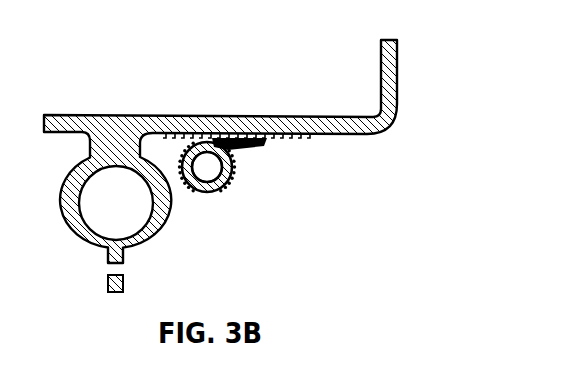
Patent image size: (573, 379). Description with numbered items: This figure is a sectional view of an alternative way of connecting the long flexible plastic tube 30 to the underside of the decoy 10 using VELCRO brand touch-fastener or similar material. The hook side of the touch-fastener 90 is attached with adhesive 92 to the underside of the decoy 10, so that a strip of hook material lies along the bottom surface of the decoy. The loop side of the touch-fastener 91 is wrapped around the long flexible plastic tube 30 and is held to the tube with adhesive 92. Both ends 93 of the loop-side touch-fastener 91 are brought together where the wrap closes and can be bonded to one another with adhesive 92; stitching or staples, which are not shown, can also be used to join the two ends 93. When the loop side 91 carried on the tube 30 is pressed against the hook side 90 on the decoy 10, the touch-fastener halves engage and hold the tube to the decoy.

The decoy 10 is at (380, 84).
The long flexible plastic tube 30 is at (190, 196).
The loop side of touch-fastener 91 is at (199, 195).
The adhesive 92 is at (230, 156).
The ends of touch-fastener 93 is at (258, 147).
The hook side of touch-fastener 90 is at (293, 140).